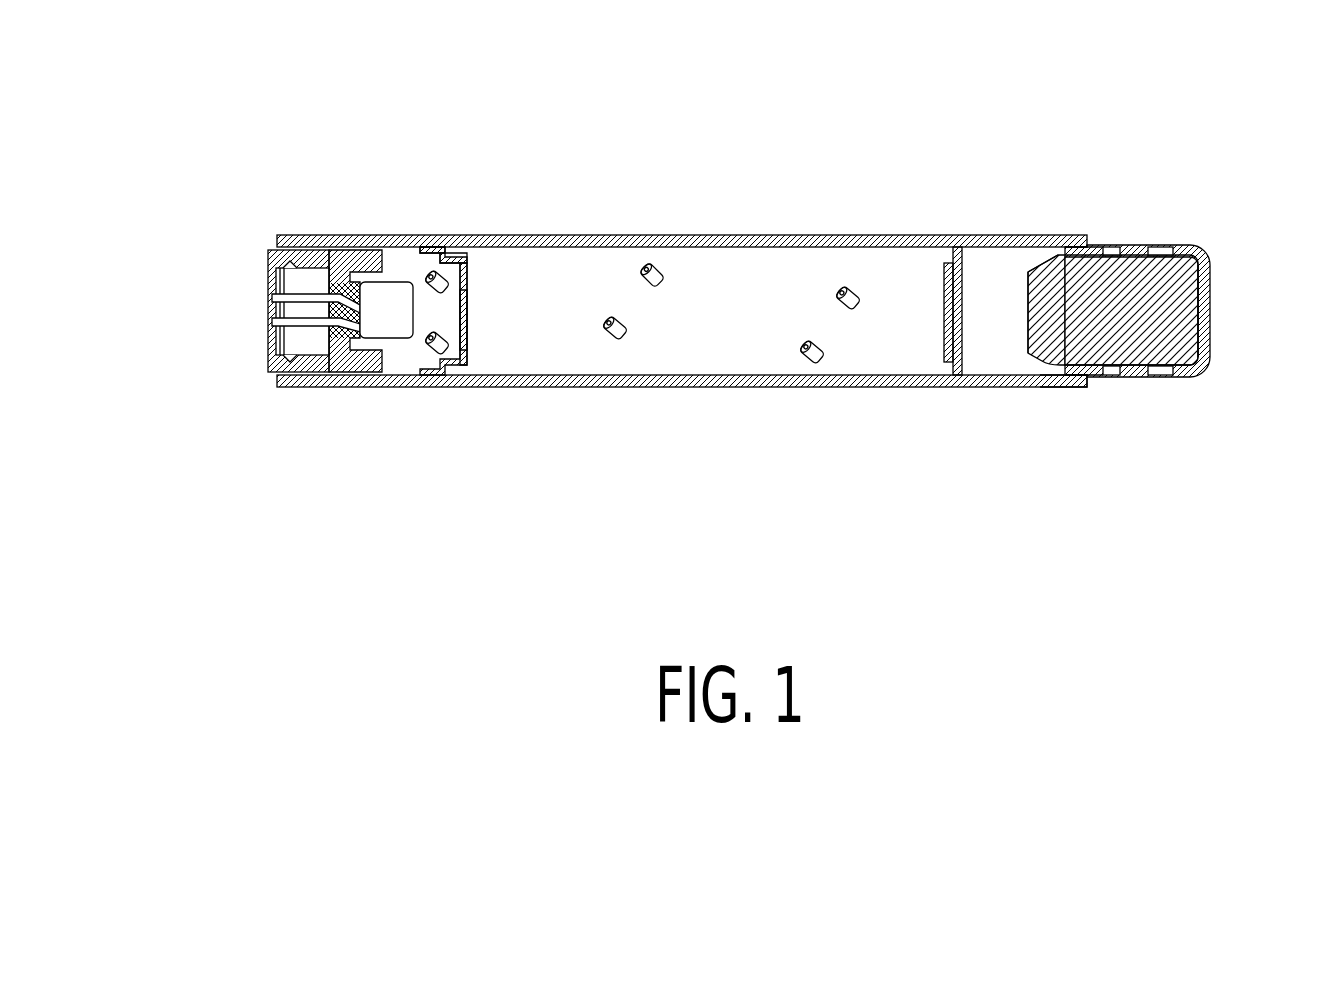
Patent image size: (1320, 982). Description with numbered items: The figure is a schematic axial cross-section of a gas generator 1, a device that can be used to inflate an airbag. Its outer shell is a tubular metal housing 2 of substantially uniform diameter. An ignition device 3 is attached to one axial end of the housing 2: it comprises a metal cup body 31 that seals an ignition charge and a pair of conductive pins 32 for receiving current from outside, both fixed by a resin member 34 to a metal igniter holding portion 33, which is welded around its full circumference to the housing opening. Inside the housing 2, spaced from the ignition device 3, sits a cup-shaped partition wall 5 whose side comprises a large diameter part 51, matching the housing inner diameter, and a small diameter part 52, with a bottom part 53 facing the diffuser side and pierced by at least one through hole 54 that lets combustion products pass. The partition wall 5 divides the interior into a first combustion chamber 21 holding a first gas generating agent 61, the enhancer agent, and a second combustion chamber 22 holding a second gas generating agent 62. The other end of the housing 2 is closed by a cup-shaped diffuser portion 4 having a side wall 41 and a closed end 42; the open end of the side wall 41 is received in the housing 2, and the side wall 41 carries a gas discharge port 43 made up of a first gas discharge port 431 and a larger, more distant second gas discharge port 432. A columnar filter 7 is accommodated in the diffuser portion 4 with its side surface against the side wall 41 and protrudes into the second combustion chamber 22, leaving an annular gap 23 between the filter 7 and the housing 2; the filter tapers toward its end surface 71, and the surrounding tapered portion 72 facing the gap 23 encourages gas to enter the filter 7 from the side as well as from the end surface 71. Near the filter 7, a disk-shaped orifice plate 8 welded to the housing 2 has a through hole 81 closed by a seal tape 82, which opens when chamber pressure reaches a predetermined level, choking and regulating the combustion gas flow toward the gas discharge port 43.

The gas generator 1 is at (268, 143).
The housing 2 is at (737, 236).
The first combustion chamber 21 is at (447, 328).
The second combustion chamber 22 is at (754, 325).
The annular gap 23 is at (1053, 377).
The ignition device 3 is at (348, 480).
The metal cup body 31 is at (380, 384).
The conductive pins 32 is at (272, 304).
The igniter holding portion 33 is at (273, 390).
The resin member 34 is at (268, 366).
The diffuser portion 4 is at (1290, 516).
The side wall 41 is at (1093, 385).
The closed end 42 is at (1214, 352).
The gas discharge port 43 is at (1205, 461).
The first gas discharge port 431 is at (1110, 380).
The second gas discharge port 432 is at (1157, 380).
The partition wall 5 is at (617, 143).
The large diameter part 51 is at (418, 253).
The small diameter part 52 is at (455, 257).
The bottom part 53 is at (467, 320).
The through hole 54 is at (467, 290).
The first gas generating agent 61 is at (394, 322).
The second gas generating agent 62 is at (614, 332).
The filter 7 is at (1137, 318).
The end surface 71 is at (1027, 318).
The tapered portion 72 is at (1043, 265).
The orifice plate 8 is at (963, 312).
The through hole 81 is at (963, 340).
The seal tape 82 is at (950, 306).